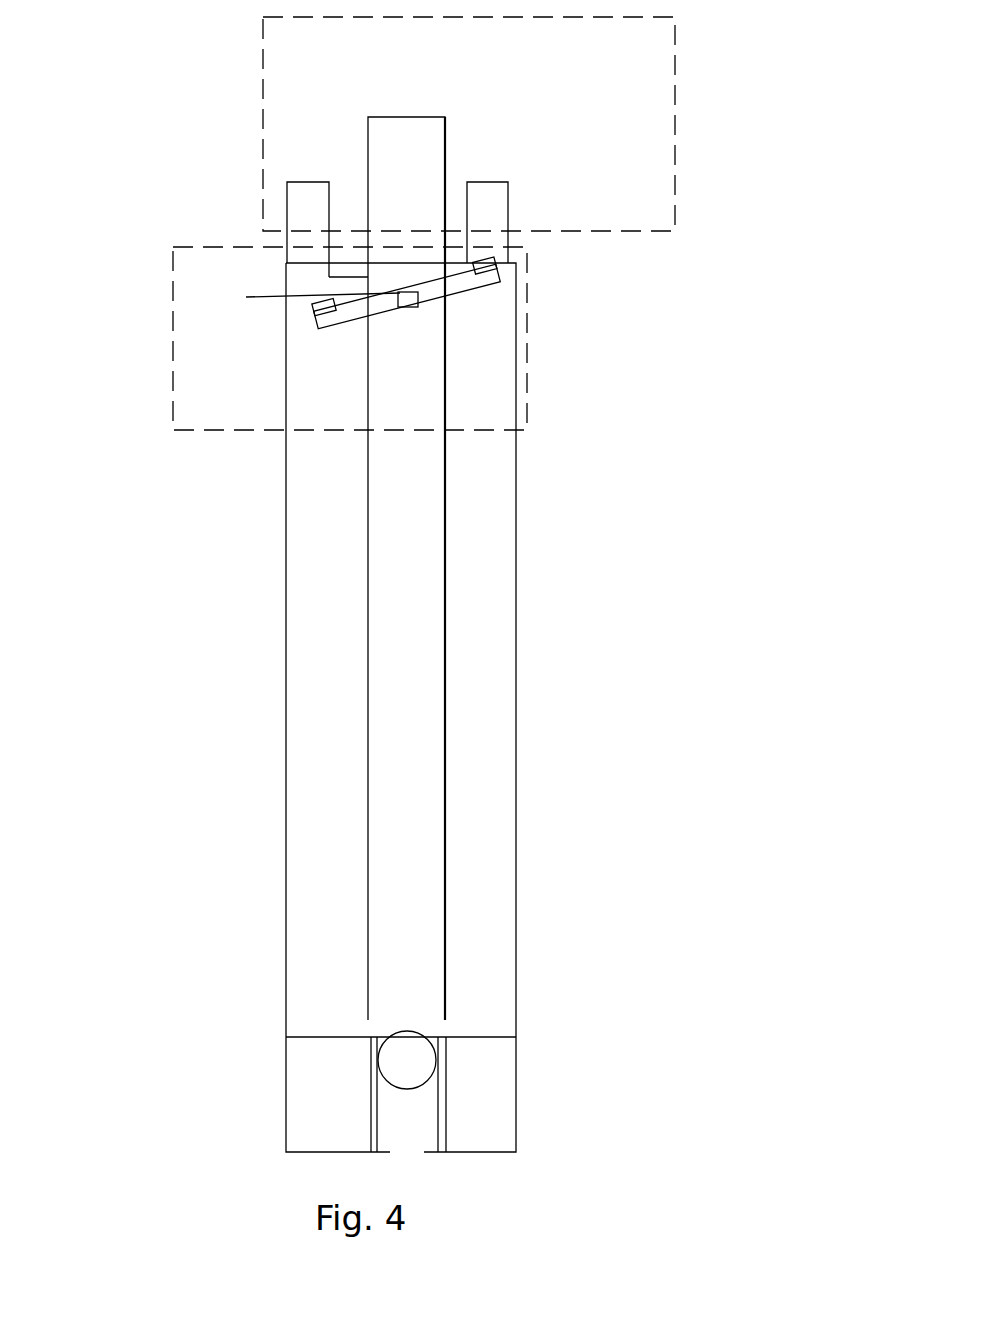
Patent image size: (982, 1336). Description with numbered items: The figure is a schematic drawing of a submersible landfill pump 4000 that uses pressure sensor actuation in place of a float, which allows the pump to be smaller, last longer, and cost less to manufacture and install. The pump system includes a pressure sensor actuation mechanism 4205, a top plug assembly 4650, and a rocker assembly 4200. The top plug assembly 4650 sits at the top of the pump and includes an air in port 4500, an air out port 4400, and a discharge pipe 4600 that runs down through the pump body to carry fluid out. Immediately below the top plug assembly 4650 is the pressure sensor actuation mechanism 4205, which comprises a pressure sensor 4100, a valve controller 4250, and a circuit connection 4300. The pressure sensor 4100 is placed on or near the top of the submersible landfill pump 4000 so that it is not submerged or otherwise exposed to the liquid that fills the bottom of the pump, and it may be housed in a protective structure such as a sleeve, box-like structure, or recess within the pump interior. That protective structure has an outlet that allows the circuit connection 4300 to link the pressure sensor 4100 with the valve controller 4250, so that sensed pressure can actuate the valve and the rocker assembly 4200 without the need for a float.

The submersible landfill pump 4000 is at (212, 690).
The pressure sensor 4100 is at (373, 292).
The rocker assembly 4200 is at (467, 282).
The pressure sensor actuation mechanism 4205 is at (173, 378).
The valve controller 4250 is at (405, 300).
The circuit connection 4300 is at (290, 306).
The air out port 4400 is at (508, 229).
The air in port 4500 is at (320, 190).
The discharge pipe 4600 is at (427, 642).
The top plug assembly 4650 is at (675, 198).